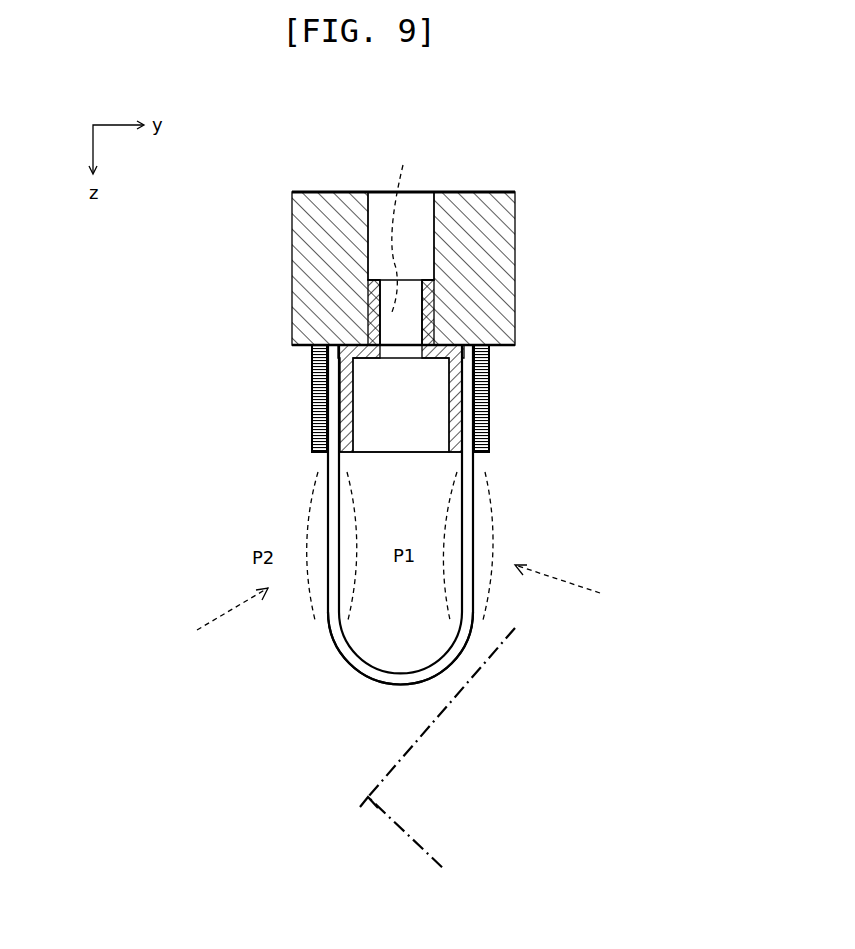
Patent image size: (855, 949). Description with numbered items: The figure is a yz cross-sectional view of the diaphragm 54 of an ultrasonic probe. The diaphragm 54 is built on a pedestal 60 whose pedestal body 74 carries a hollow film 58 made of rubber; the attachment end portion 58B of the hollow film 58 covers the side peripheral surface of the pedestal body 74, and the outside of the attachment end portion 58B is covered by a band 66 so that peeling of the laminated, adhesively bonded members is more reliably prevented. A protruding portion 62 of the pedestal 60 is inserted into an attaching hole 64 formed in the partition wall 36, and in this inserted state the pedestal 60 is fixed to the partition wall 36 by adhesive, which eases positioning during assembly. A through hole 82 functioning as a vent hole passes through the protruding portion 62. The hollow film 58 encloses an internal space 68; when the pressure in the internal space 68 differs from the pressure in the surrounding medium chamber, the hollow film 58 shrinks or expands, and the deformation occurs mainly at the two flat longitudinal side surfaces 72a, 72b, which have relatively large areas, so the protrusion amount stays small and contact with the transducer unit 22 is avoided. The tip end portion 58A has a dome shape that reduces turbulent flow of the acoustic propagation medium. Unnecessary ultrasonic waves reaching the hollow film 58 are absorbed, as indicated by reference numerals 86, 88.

The transducer unit 22 is at (412, 744).
The partition wall 36 is at (498, 192).
The diaphragm 54 is at (275, 400).
The hollow film 58 is at (326, 460).
The tip end portion 58A is at (395, 688).
The attachment end portion 58B is at (490, 387).
The pedestal 60 is at (474, 463).
The protruding portion 62 is at (427, 278).
The attaching hole 64 is at (371, 208).
The band 66 is at (490, 366).
The internal space 68 is at (414, 487).
The longitudinal side surface 72a is at (327, 570).
The longitudinal side surface 72b is at (473, 572).
The pedestal body 74 is at (352, 405).
The through hole 82 is at (405, 227).
The ultrasonic wave absorption 86 is at (230, 610).
The ultrasonic wave absorption 88 is at (570, 582).